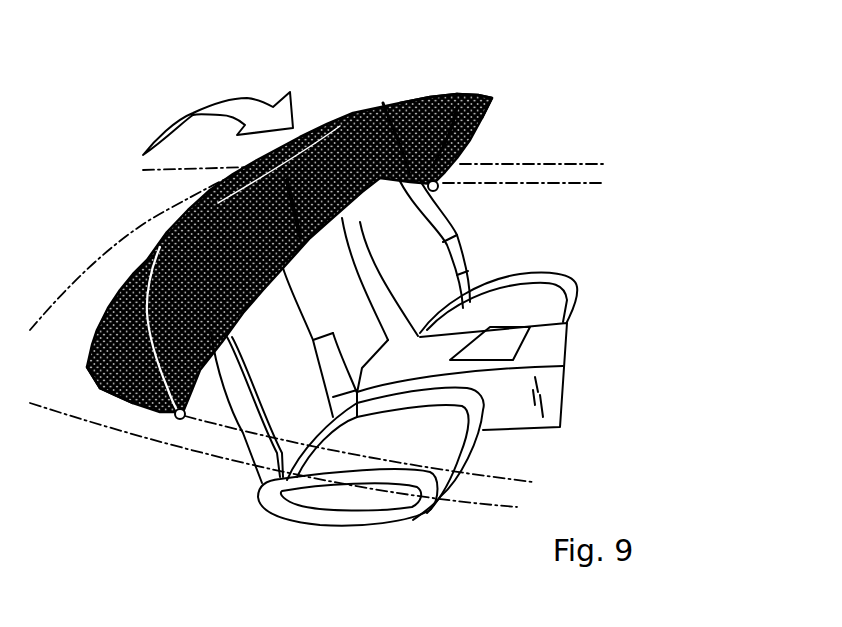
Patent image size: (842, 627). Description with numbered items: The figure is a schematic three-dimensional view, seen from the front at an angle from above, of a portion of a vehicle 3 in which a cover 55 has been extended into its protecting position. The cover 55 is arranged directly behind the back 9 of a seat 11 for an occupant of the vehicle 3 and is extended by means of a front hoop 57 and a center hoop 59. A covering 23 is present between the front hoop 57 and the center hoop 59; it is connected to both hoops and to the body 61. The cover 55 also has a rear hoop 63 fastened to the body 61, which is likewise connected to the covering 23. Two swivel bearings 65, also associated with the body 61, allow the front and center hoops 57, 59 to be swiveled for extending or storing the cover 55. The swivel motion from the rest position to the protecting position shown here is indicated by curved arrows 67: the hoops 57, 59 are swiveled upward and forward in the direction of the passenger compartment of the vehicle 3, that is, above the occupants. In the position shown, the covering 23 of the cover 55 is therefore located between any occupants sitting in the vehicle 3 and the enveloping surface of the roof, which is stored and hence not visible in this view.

The vehicle 3 is at (96, 443).
The back 9 is at (267, 487).
The seat 11 is at (547, 313).
The covering 23 is at (428, 97).
The cover 55 is at (376, 95).
The front hoop 57 is at (489, 97).
The center hoop 59 is at (160, 247).
The body 61 is at (221, 448).
The rear hoop 63 is at (120, 410).
The swivel bearings 65 is at (173, 420).
The curved arrows 67 is at (242, 107).